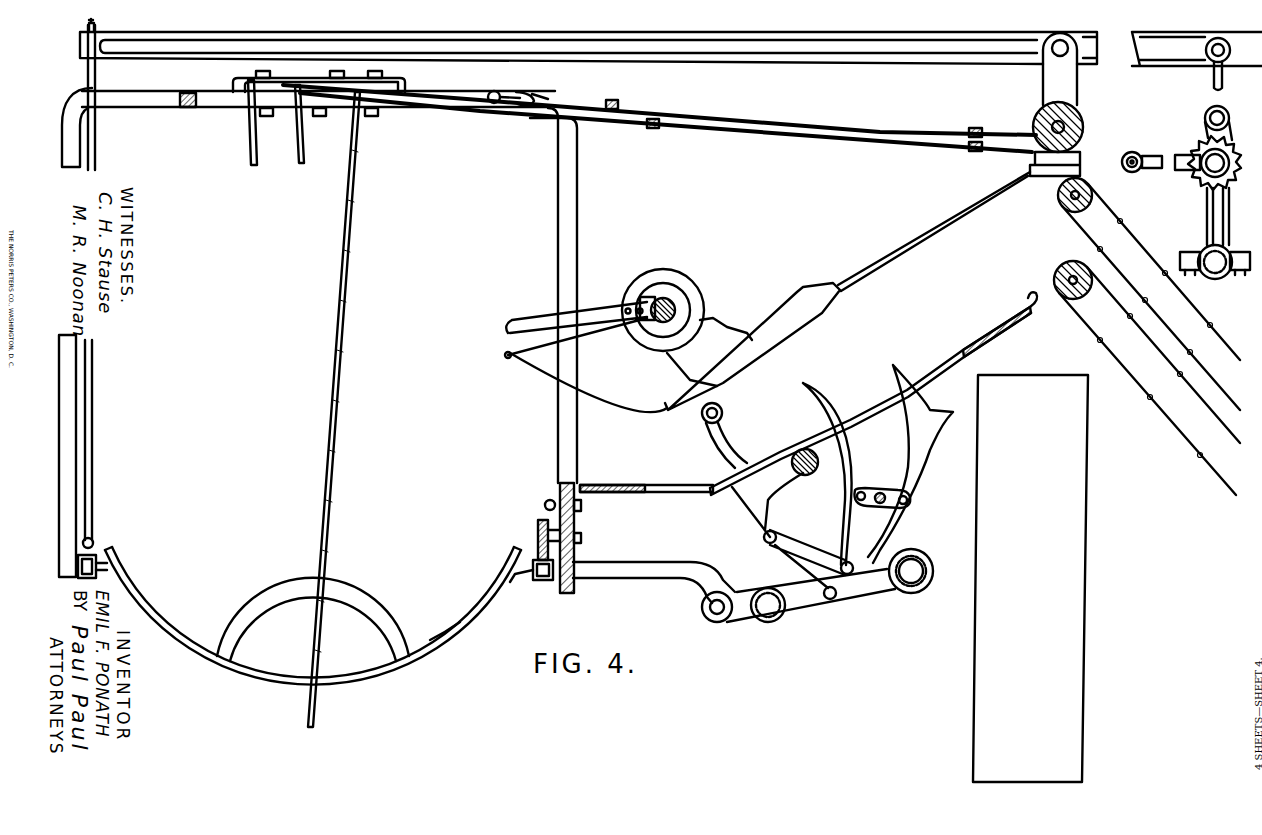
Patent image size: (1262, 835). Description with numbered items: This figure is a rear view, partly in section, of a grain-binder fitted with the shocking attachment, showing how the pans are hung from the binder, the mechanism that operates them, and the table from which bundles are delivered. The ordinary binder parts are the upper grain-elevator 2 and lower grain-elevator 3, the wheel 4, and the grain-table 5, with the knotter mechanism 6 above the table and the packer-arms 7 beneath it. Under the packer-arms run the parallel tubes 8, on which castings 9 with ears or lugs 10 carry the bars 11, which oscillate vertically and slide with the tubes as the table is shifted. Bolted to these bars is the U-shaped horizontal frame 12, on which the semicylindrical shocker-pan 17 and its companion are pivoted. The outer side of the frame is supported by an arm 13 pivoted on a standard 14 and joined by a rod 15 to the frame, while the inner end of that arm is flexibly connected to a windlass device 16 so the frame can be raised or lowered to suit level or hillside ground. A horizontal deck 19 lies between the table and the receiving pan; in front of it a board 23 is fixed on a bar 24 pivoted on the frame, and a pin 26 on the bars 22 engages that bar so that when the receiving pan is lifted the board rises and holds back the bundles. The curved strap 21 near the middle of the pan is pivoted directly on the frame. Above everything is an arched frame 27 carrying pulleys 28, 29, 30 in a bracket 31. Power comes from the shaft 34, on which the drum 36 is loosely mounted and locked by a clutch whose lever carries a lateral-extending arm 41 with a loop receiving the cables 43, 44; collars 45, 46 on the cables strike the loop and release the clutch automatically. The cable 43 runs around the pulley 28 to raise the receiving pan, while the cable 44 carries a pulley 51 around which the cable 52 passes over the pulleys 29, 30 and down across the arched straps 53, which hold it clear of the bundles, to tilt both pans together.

The upper grain-elevator 2 is at (1205, 335).
The lower grain-elevator 3 is at (1180, 436).
The wheel 4 is at (1086, 525).
The grain-table 5 is at (890, 395).
The knotter mechanism 6 is at (705, 296).
The packer-arms 7 is at (855, 459).
The parallel tubes 8 is at (772, 622).
The castings 9 is at (852, 593).
The ears or lugs 10 is at (729, 620).
The bars 11 is at (647, 567).
The U-shaped horizontal frame 12 is at (100, 556).
The arm 13 is at (805, 55).
The standard 14 is at (1043, 86).
The rod 15 is at (96, 152).
The windlass device 16 is at (1205, 137).
The shocker-pan 17 is at (445, 632).
The horizontal deck 19 is at (612, 493).
The curved strap 21 is at (438, 650).
The bars 22 is at (538, 545).
The board 23 is at (574, 581).
The bar 24 is at (545, 506).
The pin 26 is at (581, 538).
The arched frame 27 is at (558, 165).
The pulley 28 is at (272, 86).
The pulley 29 is at (320, 85).
The pulley 30 is at (395, 82).
The bracket 31 is at (248, 80).
The shaft 34 is at (1077, 122).
The drum 36 is at (1047, 148).
The lateral-extending arm 41 is at (976, 130).
The cable 43 is at (250, 148).
The cable 44 is at (680, 105).
The collar 45 is at (652, 129).
The collar 46 is at (624, 93).
The pulley 51 is at (496, 90).
The cable 52 is at (438, 90).
The arched straps 53 is at (353, 598).